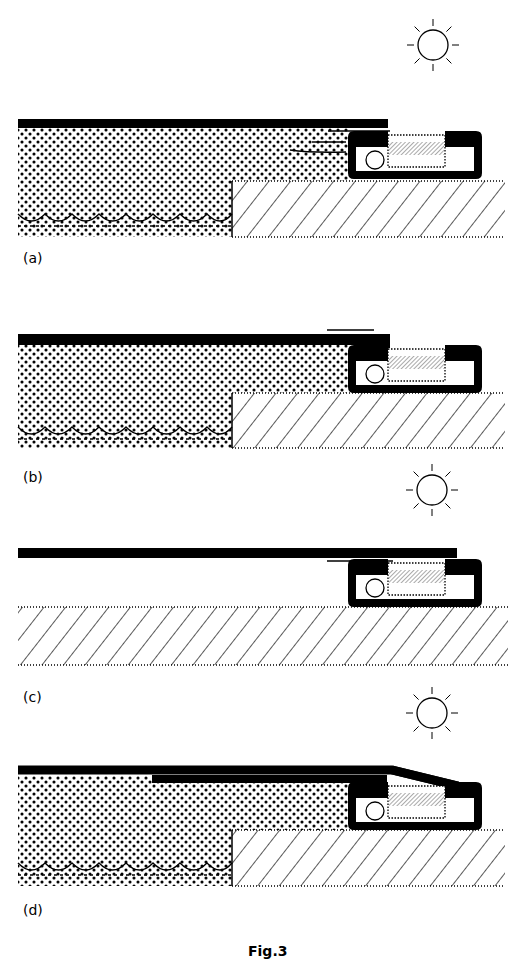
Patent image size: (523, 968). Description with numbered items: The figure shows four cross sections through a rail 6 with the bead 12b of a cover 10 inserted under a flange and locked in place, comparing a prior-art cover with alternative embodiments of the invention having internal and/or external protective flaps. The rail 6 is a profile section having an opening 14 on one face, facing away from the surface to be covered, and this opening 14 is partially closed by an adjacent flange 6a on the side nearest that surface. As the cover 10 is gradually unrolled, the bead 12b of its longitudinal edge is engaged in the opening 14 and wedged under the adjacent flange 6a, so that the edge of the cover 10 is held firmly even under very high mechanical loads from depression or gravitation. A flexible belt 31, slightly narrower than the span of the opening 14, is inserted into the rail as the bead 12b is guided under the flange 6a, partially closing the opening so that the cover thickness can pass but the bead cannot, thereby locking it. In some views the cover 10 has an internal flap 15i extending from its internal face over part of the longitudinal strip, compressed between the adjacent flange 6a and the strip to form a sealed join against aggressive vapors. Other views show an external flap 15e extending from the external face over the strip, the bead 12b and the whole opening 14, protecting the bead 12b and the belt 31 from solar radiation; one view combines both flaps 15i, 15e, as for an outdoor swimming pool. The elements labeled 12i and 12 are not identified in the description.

The cover 10 is at (180, 118).
The adjacent flange 6a is at (290, 150).
The inner edge of solar unit 12i is at (312, 142).
The solar power unit housing 12 is at (423, 151).
The opening 14 is at (422, 120).
The flexible belt 31 is at (428, 128).
The rail 6 is at (473, 118).
The bead 12b is at (369, 183).
The internal flap 15i is at (372, 342).
The external flap 15e is at (453, 550).